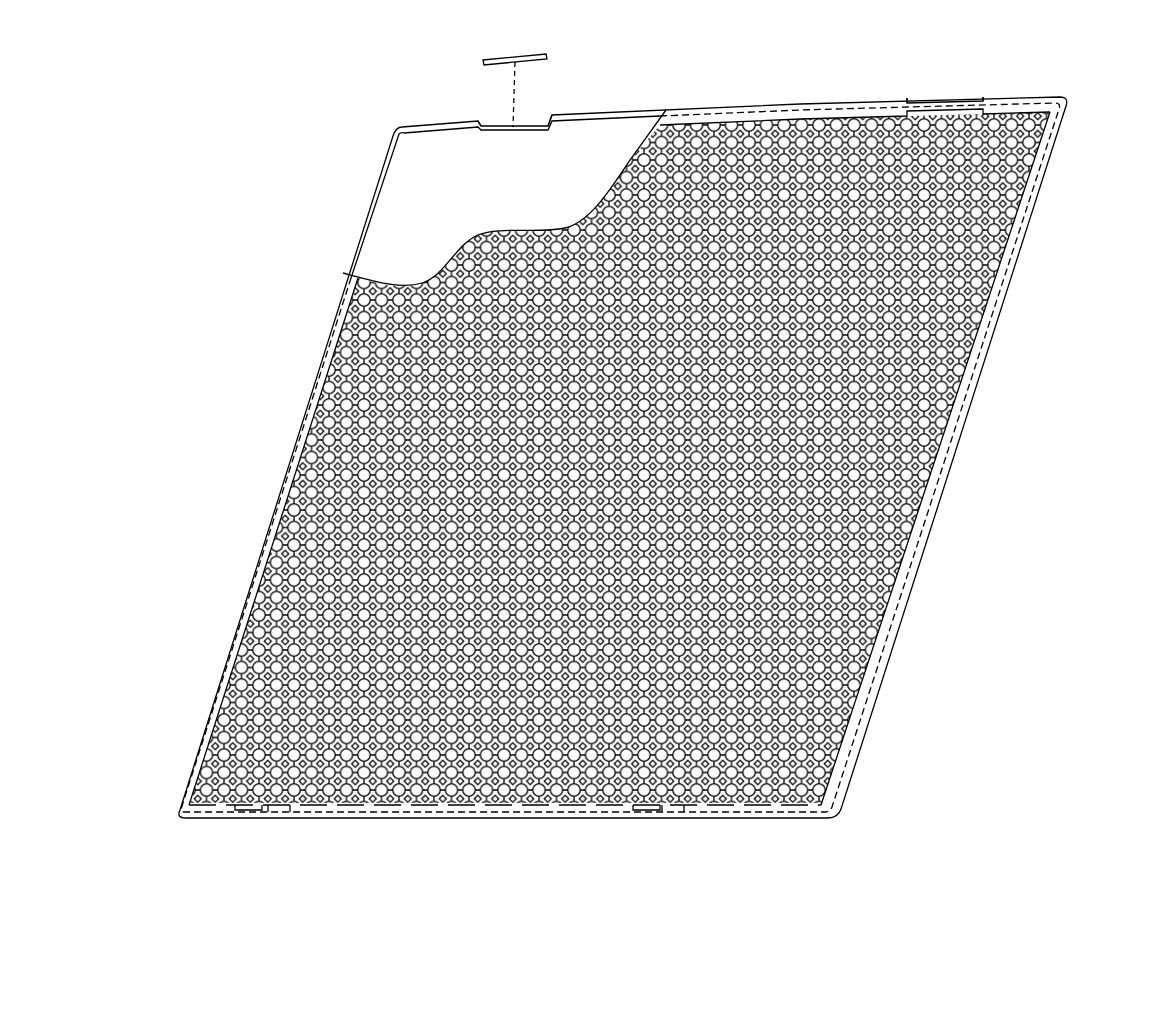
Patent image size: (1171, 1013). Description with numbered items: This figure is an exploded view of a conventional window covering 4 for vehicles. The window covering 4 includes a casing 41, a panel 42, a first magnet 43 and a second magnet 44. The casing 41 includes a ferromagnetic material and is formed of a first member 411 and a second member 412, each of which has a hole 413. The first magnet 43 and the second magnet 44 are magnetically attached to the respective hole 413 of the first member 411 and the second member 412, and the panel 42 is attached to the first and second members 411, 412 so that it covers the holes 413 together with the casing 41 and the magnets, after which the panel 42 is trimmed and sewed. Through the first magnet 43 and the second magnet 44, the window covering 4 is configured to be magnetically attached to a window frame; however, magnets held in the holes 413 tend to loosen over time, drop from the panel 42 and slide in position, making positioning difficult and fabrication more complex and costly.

The window covering 4 is at (176, 174).
The casing 41 is at (388, 138).
The first member 411 is at (637, 104).
The second member 412 is at (392, 818).
The hole 413 is at (538, 121).
The panel 42 is at (420, 280).
The first magnet 43 is at (492, 60).
The second magnet 44 is at (242, 818).